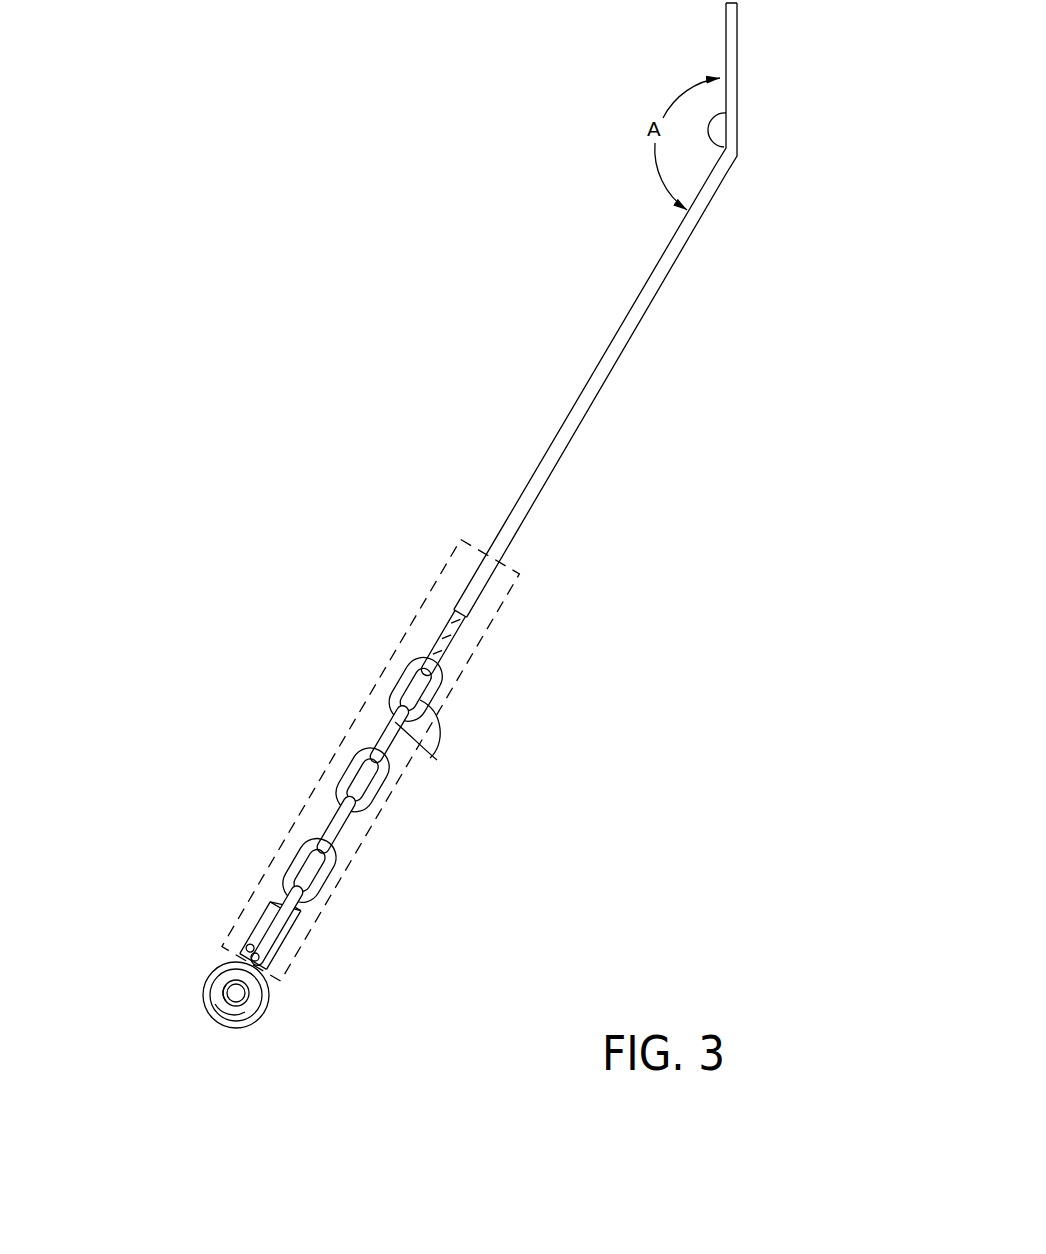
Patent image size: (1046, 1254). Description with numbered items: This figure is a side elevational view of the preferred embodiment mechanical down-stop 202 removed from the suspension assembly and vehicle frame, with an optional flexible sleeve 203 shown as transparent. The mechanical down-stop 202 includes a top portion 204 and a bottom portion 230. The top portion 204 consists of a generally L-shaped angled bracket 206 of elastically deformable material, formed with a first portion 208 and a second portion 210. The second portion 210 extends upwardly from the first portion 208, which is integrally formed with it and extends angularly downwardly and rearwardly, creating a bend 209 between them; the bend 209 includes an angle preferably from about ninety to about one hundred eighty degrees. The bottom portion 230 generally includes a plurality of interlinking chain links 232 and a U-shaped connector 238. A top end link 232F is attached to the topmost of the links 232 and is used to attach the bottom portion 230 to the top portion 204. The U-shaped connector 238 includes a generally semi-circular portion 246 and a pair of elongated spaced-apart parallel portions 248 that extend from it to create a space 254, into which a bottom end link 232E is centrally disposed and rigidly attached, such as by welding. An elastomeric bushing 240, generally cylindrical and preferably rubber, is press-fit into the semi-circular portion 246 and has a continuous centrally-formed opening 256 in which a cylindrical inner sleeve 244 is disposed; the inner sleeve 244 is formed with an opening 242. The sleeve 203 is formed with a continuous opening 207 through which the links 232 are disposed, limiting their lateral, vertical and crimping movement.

The mechanical down-stop 202 is at (342, 322).
The flexible sleeve 203 is at (497, 622).
The top portion 204 is at (658, 313).
The angled bracket 206 is at (592, 368).
The continuous opening 207 is at (512, 563).
The first portion 208 is at (697, 220).
The bend 209 is at (723, 112).
The second portion 210 is at (738, 57).
The bottom portion 230 is at (322, 762).
The plurality of interlinking chain links 232 is at (382, 782).
The top end link 232F is at (440, 633).
The bottom end link 232E is at (318, 913).
The U-shaped connector 238 is at (237, 947).
The elastomeric bushing 240 is at (247, 1013).
The opening 242 is at (252, 1000).
The cylindrical inner sleeve 244 is at (222, 993).
The semi-circular portion 246 is at (207, 973).
The elongated spaced-apart parallel portions 248 is at (267, 912).
The space 254 is at (262, 972).
The continuous centrally-formed opening 256 is at (217, 997).